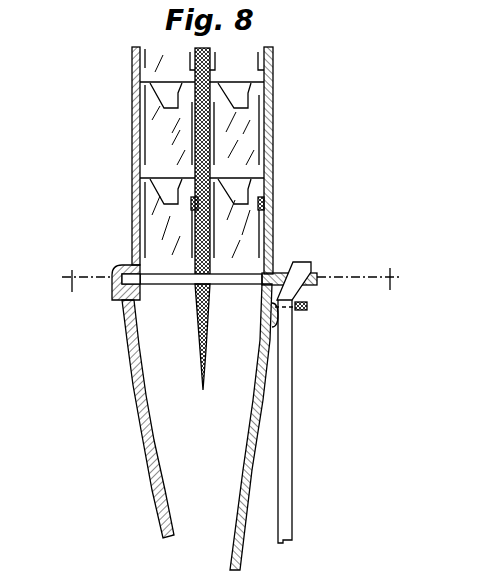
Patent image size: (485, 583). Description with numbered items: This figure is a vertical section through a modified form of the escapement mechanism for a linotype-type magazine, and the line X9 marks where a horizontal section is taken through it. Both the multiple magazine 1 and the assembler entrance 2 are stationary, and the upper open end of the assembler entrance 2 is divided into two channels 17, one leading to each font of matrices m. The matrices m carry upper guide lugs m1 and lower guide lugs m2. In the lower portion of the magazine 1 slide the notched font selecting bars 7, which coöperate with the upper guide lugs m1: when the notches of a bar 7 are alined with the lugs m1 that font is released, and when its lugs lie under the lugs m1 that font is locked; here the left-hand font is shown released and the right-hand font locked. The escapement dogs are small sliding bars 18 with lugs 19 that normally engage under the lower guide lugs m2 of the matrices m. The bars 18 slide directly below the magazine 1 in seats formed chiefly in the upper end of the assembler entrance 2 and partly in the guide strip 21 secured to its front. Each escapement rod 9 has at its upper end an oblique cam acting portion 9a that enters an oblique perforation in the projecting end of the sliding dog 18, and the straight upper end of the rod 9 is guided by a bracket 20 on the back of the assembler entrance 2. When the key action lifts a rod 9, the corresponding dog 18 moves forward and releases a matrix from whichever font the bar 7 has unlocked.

The multiple magazine 1 is at (274, 133).
The assembler entrance 2 is at (157, 510).
The notched font selecting bar 7 is at (132, 218).
The escapement rod 9 is at (292, 458).
The oblique cam acting portion 9a is at (300, 293).
The channel 17 is at (200, 337).
The sliding bar (escapement dog) 18 is at (252, 284).
The lug 19 is at (203, 284).
The bracket 20 is at (307, 310).
The guide strip 21 is at (113, 292).
The matrix m is at (202, 156).
The upper guide lug m1 is at (273, 96).
The lower guide lug m2 is at (132, 258).
The section line X9 is at (232, 285).